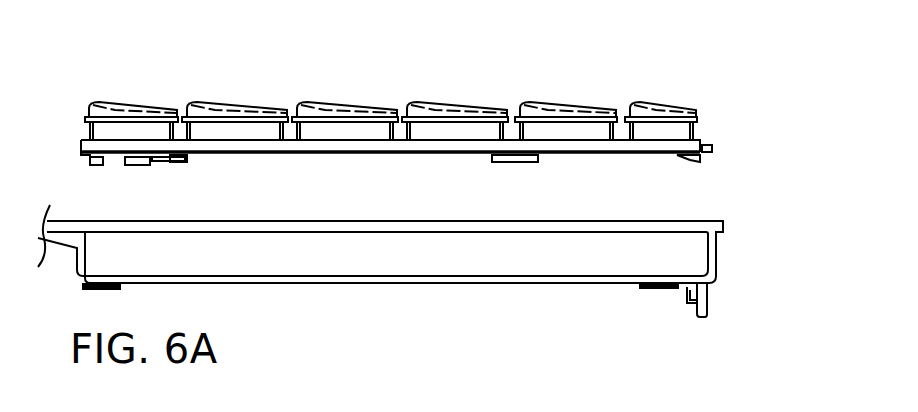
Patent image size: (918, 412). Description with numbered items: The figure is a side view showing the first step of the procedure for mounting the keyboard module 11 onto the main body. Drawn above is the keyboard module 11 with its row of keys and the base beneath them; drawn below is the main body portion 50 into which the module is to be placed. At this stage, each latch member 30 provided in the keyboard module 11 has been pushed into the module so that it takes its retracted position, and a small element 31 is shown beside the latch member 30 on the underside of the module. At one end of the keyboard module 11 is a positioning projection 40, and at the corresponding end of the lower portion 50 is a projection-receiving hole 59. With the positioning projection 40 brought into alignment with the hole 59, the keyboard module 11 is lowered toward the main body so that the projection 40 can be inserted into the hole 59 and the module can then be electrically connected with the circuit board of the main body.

The keyboard module 11 is at (413, 108).
The latch member 30 is at (168, 165).
The projection 31 is at (128, 165).
The positioning projection 40 is at (710, 143).
The frame / housing base 50 is at (402, 295).
The projection-receiving hole 59 is at (717, 267).